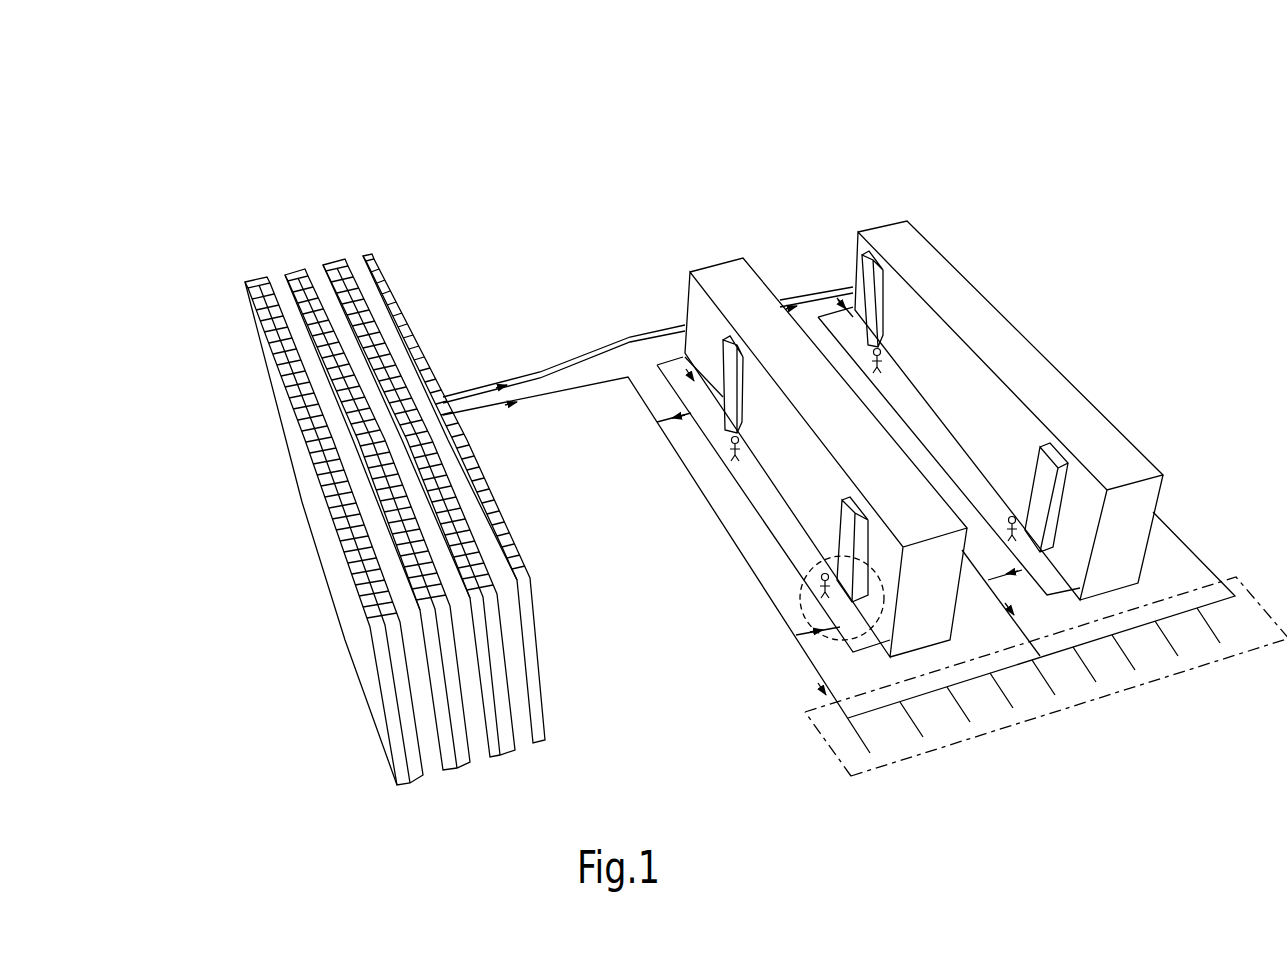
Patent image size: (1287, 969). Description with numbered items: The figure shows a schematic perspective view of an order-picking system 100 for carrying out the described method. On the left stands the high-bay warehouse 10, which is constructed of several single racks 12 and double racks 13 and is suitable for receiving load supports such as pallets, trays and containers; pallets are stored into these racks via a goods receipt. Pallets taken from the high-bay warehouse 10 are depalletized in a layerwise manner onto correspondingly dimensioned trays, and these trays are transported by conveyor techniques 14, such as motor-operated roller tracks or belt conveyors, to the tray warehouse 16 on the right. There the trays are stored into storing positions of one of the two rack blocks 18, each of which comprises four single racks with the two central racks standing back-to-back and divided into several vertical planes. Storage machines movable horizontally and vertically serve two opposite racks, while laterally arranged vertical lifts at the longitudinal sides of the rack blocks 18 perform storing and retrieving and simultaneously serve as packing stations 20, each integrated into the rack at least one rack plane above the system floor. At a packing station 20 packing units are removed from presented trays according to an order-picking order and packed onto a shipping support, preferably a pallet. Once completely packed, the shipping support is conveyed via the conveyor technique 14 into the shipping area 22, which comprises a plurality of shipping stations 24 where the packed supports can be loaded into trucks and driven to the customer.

The order-picking system 100 is at (509, 199).
The high-bay warehouse 10 is at (281, 235).
The single rack 12 is at (546, 745).
The double rack 13 is at (460, 770).
The conveyor technique 14 is at (603, 346).
The tray warehouse 16 is at (801, 168).
The rack block 18 is at (707, 250).
The packing station 20 is at (800, 613).
The shipping area 22 is at (825, 740).
The shipping station 24 is at (974, 738).